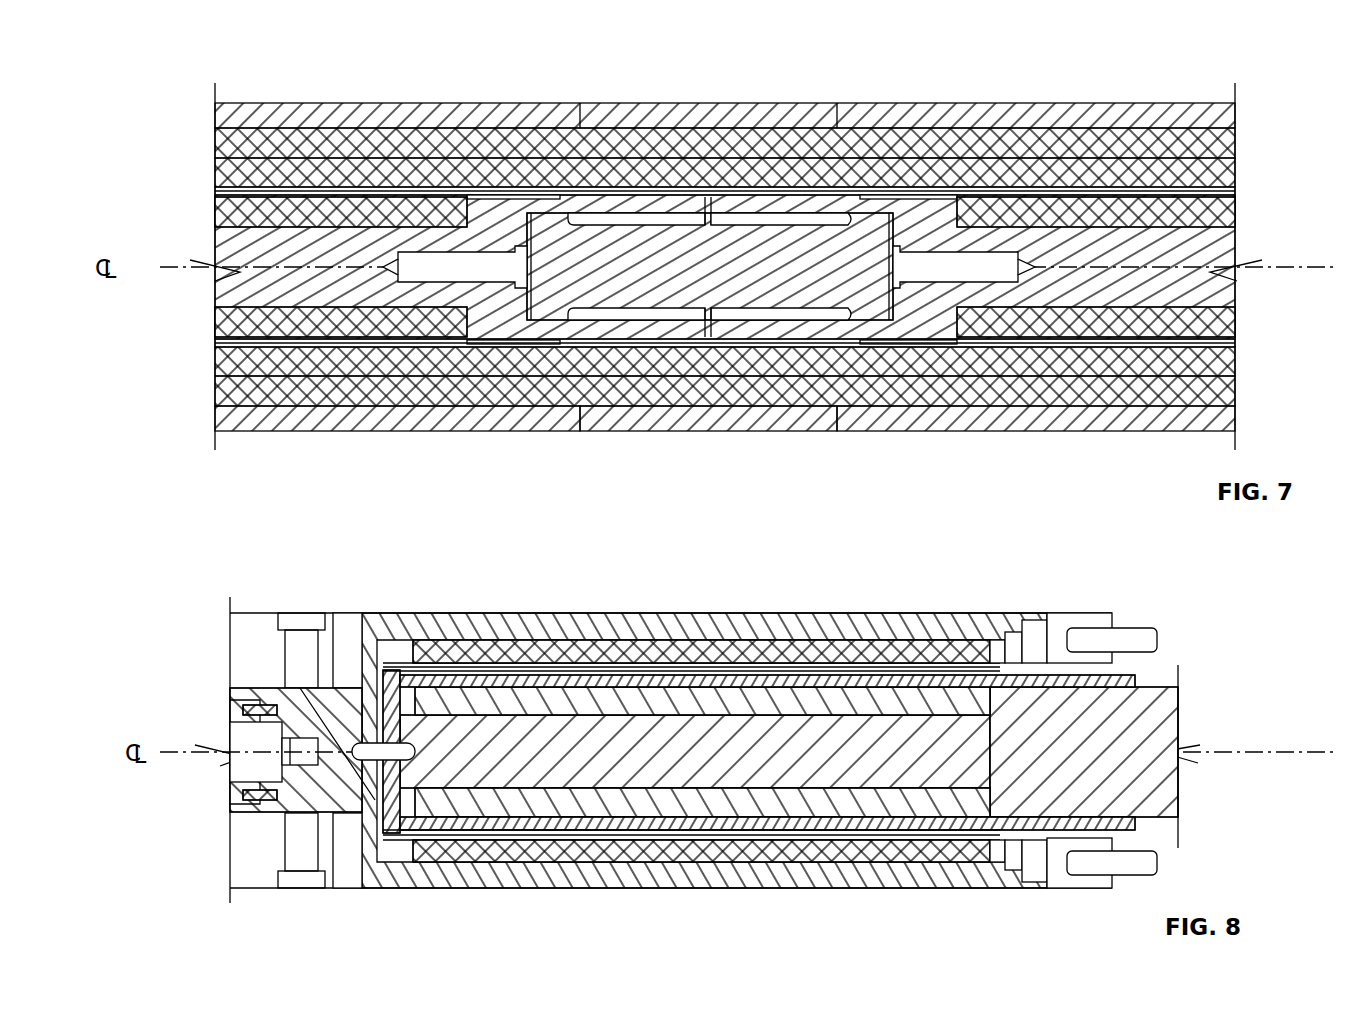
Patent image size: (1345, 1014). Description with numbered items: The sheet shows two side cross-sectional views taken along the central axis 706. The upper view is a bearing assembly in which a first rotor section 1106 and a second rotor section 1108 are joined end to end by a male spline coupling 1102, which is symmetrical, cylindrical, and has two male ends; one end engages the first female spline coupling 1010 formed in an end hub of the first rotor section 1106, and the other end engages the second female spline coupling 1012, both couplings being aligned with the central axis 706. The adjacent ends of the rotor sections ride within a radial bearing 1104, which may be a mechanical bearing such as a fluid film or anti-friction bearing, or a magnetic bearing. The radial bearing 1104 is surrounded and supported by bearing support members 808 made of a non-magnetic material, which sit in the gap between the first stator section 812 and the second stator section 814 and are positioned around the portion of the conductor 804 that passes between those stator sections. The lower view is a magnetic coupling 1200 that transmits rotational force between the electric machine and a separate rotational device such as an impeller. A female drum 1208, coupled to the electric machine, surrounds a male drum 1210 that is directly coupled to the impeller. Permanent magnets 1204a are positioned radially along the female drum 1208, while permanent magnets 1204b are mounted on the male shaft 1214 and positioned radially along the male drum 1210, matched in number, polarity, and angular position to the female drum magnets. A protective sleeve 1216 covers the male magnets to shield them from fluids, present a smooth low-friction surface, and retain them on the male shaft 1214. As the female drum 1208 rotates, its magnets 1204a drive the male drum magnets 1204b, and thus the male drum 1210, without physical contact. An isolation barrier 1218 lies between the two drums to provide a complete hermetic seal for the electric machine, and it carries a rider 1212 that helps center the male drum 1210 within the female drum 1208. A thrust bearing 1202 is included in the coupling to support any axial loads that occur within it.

In FIG. 7, the central axis 706 is at (1284, 268).
In FIG. 8, the central axis 706 is at (1247, 752).
In FIG. 7, the conductor 804 is at (368, 142).
In FIG. 7, the bearing support member 808 is at (798, 420).
In FIG. 7, the first stator section 812 is at (442, 418).
In FIG. 7, the second stator section 814 is at (1045, 418).
In FIG. 7, the first female spline coupling 1010 is at (862, 325).
In FIG. 7, the second female spline coupling 1012 is at (607, 198).
In FIG. 7, the male spline coupling 1102 is at (690, 300).
In FIG. 8, the male spline coupling 1102 is at (228, 717).
In FIG. 7, the radial bearing 1104 is at (760, 187).
In FIG. 7, the first rotor section 1106 is at (210, 209).
In FIG. 7, the second rotor section 1108 is at (1243, 234).
In FIG. 8, the magnetic coupling 1200 is at (223, 560).
In FIG. 8, the thrust bearing 1202 is at (347, 620).
In FIG. 8, the permanent magnets 1204a is at (603, 650).
In FIG. 8, the permanent magnets 1204b is at (945, 810).
In FIG. 8, the female drum 1208 is at (760, 866).
In FIG. 8, the male drum 1210 is at (870, 660).
In FIG. 8, the rider 1212 is at (384, 762).
In FIG. 8, the male shaft 1214 is at (1065, 808).
In FIG. 8, the protective sleeve 1216 is at (1090, 682).
In FIG. 8, the isolation barrier 1218 is at (712, 672).